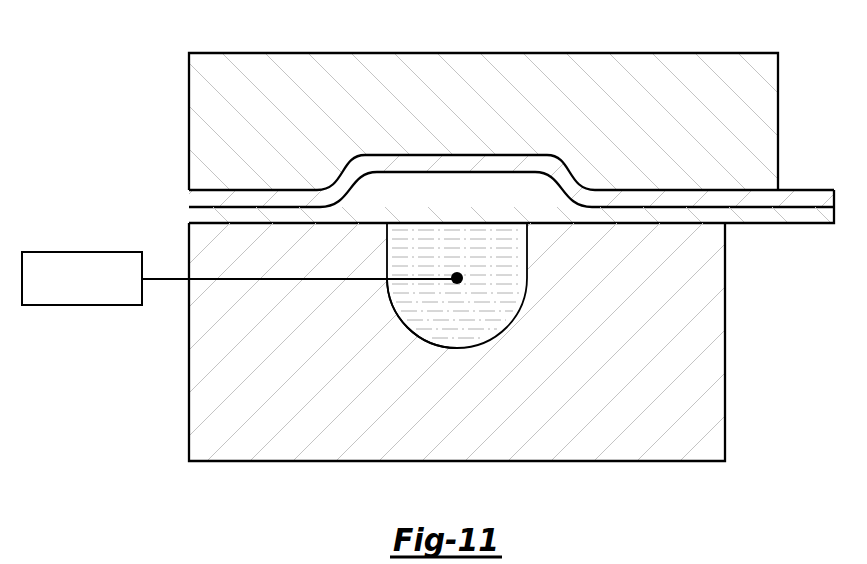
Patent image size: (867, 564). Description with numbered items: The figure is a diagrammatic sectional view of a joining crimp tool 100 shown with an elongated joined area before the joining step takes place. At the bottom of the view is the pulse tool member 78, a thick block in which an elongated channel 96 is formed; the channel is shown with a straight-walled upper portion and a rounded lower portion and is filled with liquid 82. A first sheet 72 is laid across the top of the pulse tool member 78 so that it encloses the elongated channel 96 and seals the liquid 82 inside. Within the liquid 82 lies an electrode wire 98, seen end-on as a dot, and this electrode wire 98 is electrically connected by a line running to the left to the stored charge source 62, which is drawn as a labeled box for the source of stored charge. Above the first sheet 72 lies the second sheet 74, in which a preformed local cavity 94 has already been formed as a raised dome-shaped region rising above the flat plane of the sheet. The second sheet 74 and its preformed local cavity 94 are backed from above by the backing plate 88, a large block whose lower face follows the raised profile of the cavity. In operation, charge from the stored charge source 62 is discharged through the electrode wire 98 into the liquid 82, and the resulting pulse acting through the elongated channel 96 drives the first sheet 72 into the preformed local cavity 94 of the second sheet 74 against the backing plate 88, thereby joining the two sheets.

The joining crimp tool 100 is at (125, 47).
The backing plate 88 is at (507, 68).
The preformed local cavity 94 is at (443, 186).
The second sheet 74 is at (817, 193).
The first sheet 72 is at (806, 225).
The pulse tool member 78 is at (707, 421).
The liquid 82 is at (466, 333).
The elongated channel 96 is at (402, 321).
The electrode wire 98 is at (462, 280).
The stored charge source 62 is at (84, 252).